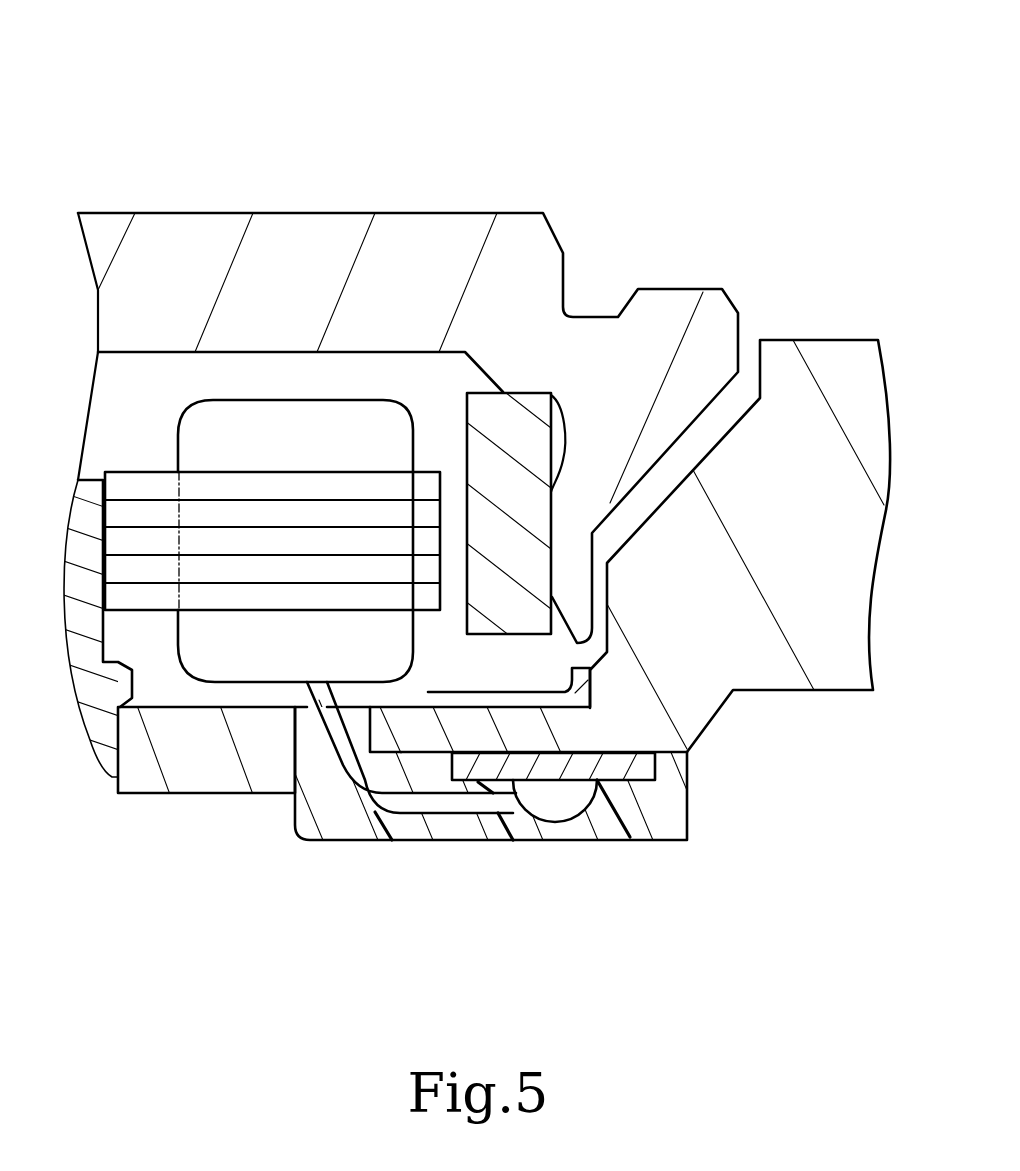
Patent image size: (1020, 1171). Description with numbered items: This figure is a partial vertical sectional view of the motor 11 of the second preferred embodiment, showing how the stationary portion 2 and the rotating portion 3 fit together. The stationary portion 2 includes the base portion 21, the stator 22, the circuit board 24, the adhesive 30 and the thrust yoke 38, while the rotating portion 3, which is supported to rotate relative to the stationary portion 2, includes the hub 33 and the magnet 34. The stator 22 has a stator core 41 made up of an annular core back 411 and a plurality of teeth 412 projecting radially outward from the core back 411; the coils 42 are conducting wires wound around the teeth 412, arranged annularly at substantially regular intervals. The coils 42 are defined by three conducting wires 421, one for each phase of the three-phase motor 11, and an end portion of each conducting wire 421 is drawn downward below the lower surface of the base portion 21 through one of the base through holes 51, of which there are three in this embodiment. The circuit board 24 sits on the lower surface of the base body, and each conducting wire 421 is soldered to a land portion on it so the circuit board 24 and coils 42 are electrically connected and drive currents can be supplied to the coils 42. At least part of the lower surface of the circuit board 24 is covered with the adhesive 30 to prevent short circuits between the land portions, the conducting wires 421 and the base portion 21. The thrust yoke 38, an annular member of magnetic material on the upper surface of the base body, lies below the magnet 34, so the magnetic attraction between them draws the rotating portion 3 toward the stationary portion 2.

The motor 11 is at (448, 106).
The rotating portion 3 is at (100, 192).
The stator 22 is at (173, 92).
The stator core 41 is at (260, 130).
The core back 411 is at (133, 515).
The teeth 412 is at (258, 515).
The coils 42 is at (333, 420).
The hub 33 is at (522, 422).
The magnet 34 is at (554, 425).
The stationary portion 2 is at (149, 822).
The adhesive 30 is at (360, 823).
The conducting wires 421 is at (415, 807).
The base through holes 51 is at (327, 714).
The base portion 21 is at (493, 730).
The thrust yoke 38 is at (557, 703).
The circuit board 24 is at (620, 763).